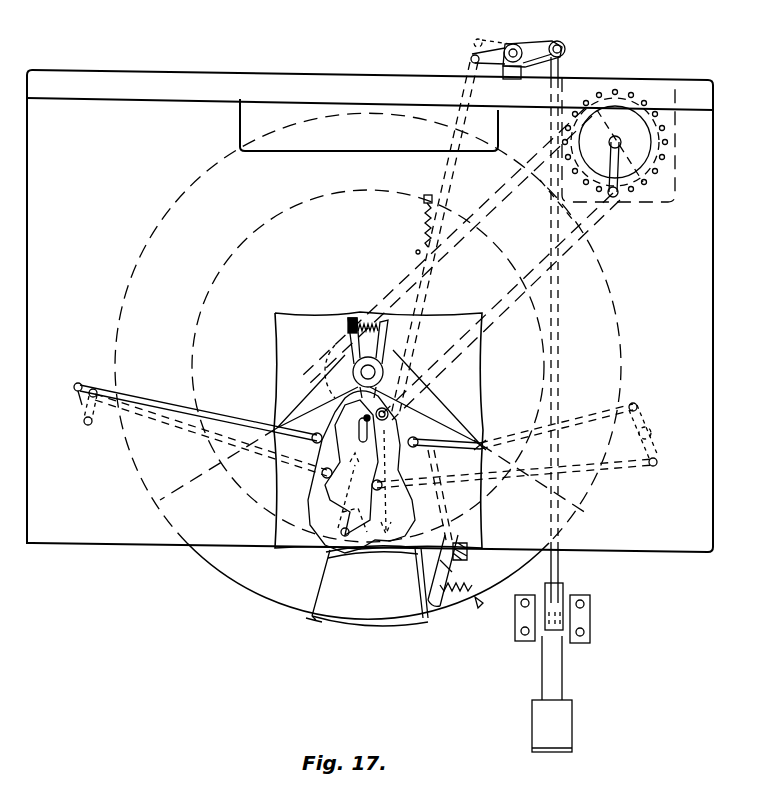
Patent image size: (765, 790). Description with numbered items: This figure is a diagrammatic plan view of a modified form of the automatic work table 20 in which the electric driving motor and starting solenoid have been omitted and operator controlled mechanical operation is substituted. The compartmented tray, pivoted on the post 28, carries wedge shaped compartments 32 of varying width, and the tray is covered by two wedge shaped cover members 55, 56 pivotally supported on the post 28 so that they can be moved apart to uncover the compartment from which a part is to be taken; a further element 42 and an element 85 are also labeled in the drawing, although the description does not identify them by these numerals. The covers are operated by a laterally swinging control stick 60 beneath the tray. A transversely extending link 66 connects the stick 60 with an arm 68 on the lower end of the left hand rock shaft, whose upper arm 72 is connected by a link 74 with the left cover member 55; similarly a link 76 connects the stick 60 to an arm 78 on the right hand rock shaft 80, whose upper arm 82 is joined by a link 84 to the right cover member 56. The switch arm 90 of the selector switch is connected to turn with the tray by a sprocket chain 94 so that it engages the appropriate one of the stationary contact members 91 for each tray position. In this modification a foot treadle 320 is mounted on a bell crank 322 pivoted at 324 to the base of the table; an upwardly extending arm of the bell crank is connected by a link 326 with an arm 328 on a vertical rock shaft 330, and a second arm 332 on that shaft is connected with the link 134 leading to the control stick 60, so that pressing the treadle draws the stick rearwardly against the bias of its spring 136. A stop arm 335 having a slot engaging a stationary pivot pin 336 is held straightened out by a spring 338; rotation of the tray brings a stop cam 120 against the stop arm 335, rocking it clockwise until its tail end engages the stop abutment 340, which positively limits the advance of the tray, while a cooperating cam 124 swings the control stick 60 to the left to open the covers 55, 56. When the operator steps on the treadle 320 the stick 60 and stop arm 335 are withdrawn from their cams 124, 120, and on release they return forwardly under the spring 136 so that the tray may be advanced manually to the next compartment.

The work table 20 is at (94, 553).
The post 28 is at (376, 373).
The compartments 32 is at (352, 612).
The flange 42 is at (322, 626).
The cover member 55 is at (270, 600).
The cover member 56 is at (500, 605).
The control stick 60 is at (340, 496).
The link 66 is at (180, 430).
The arm 68 is at (90, 426).
The arm 72 is at (74, 394).
The link 74 is at (163, 402).
The link 76 is at (600, 416).
The arm 78 is at (640, 404).
The rock shaft 80 is at (652, 432).
The arm 82 is at (658, 462).
The link 84 is at (623, 472).
The pawl 85 is at (352, 333).
The switch arm 90 is at (640, 200).
The stationary contact members 91 is at (618, 88).
The sprocket chain 94 is at (497, 318).
The stop cam 120 is at (438, 617).
The cam 124 is at (343, 550).
The link 134 is at (428, 296).
The spring 136 is at (420, 232).
The foot treadle 320 is at (560, 732).
The bell crank 322 is at (552, 675).
The pivot 324 is at (592, 612).
The link 326 is at (560, 572).
The arm 328 is at (548, 42).
The rock shaft 330 is at (515, 44).
The second arm 332 is at (481, 38).
The stop arm 335 is at (450, 566).
The stationary pivot pin 336 is at (440, 565).
The spring 338 is at (458, 600).
The stop abutment 340 is at (468, 544).